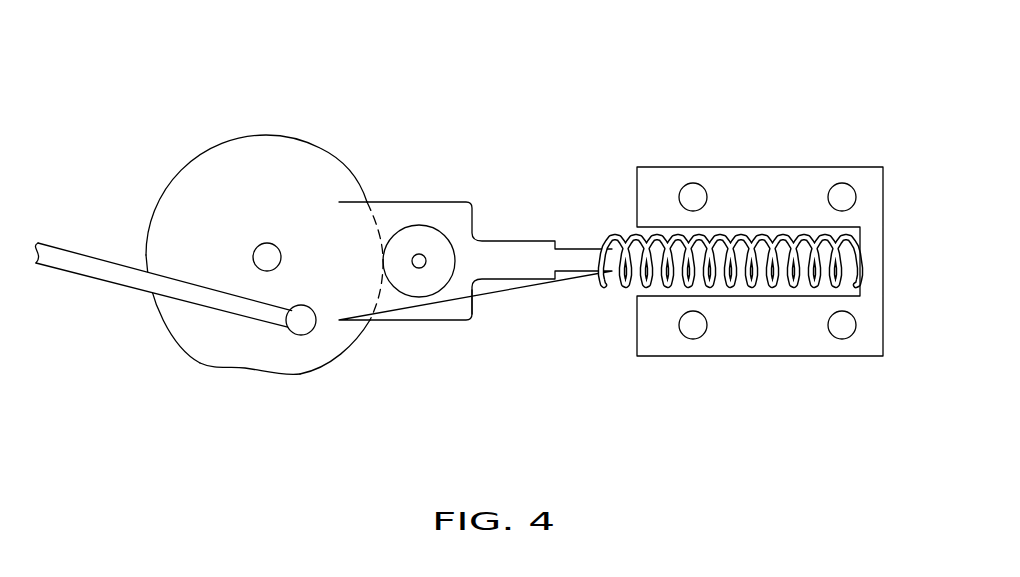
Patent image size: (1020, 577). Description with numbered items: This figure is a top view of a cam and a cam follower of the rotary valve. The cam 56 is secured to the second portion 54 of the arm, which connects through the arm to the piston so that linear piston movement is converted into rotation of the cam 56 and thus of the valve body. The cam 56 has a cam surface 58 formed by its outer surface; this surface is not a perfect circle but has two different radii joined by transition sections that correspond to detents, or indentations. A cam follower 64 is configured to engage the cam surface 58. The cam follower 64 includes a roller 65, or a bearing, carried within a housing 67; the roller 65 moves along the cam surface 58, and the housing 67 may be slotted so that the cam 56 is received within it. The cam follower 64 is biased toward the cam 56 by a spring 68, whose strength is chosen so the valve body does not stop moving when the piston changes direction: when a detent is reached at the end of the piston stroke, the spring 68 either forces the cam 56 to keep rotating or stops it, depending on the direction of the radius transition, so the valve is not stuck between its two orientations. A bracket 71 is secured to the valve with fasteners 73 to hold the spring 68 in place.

The second portion of the arm 54 is at (86, 256).
The cam 56 is at (295, 162).
The cam surface 58 is at (333, 360).
The cam follower 64 is at (473, 178).
The roller 65 is at (418, 234).
The housing 67 is at (475, 298).
The spring 68 is at (763, 240).
The bracket 71 is at (877, 177).
The fasteners 73 is at (693, 193).